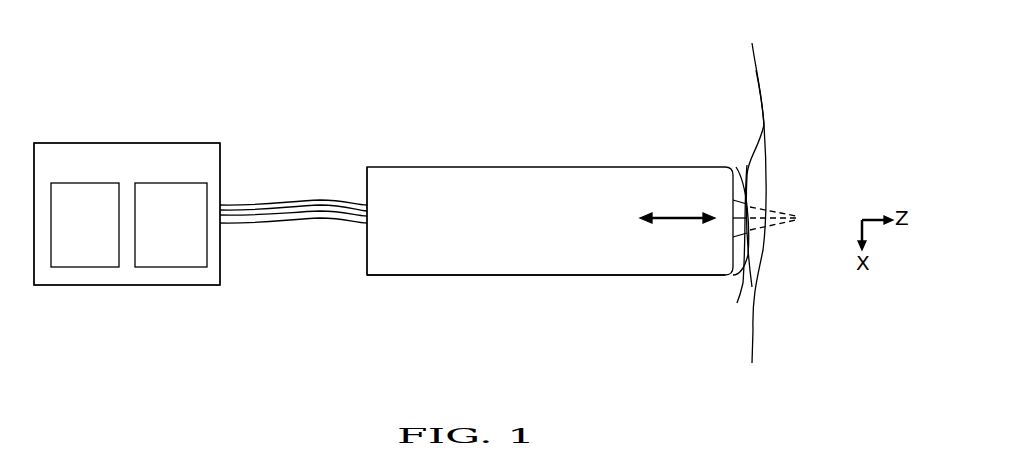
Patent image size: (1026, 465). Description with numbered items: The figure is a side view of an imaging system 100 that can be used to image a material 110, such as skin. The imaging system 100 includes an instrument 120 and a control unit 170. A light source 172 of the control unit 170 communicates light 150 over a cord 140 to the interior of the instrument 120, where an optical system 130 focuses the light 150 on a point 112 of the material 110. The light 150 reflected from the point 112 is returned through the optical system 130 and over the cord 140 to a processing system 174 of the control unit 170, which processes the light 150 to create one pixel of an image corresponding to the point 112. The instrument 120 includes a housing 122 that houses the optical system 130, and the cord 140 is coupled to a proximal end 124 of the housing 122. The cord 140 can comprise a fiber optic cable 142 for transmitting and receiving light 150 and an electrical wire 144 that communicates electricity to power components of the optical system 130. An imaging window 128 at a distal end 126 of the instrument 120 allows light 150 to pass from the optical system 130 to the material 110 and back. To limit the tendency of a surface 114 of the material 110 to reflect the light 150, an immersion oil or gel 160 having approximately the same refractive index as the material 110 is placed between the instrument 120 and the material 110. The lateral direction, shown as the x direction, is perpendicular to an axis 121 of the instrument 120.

The imaging system 100 is at (74, 70).
The material 110 is at (757, 65).
The point 112 is at (798, 216).
The surface 114 is at (755, 107).
The instrument 120 is at (382, 148).
The axis 121 is at (682, 217).
The housing 122 is at (523, 277).
The proximal end 124 is at (378, 277).
The distal end 126 is at (730, 277).
The imaging window 128 is at (737, 303).
The optical system 130 is at (490, 200).
The cord 140 is at (270, 227).
The fiber optic cable 142 is at (255, 218).
The electrical wire 144 is at (310, 212).
The light 150 is at (776, 235).
The immersion oil or gel 160 is at (755, 152).
The control unit 170 is at (143, 173).
The light source 172 is at (98, 235).
The processing system 174 is at (188, 235).